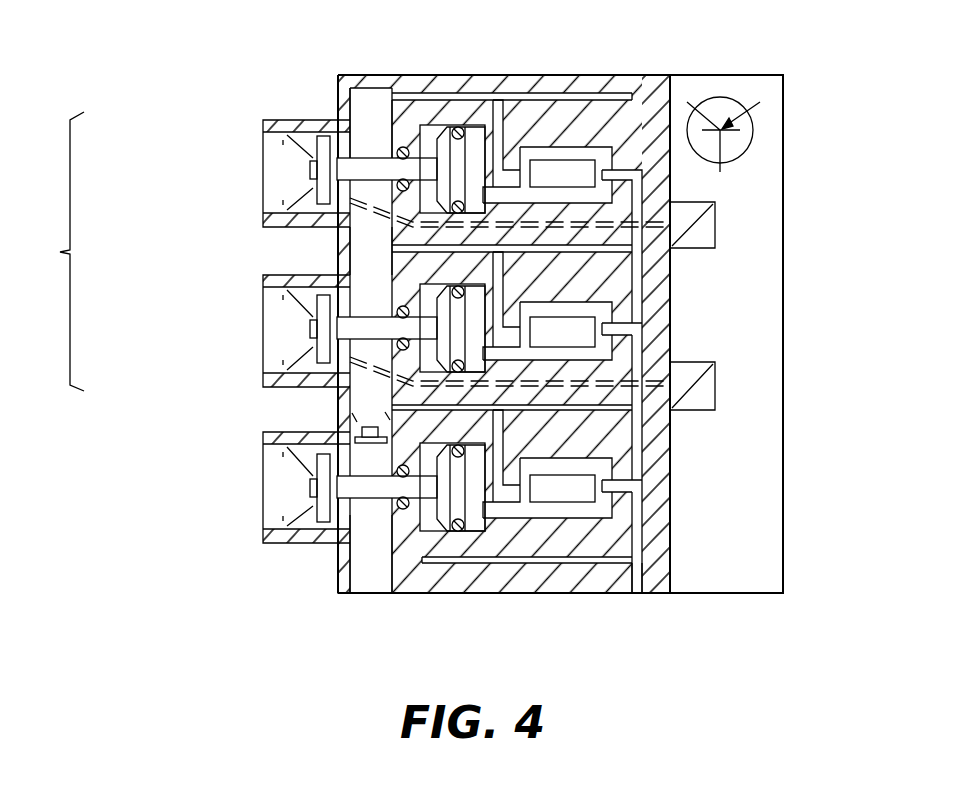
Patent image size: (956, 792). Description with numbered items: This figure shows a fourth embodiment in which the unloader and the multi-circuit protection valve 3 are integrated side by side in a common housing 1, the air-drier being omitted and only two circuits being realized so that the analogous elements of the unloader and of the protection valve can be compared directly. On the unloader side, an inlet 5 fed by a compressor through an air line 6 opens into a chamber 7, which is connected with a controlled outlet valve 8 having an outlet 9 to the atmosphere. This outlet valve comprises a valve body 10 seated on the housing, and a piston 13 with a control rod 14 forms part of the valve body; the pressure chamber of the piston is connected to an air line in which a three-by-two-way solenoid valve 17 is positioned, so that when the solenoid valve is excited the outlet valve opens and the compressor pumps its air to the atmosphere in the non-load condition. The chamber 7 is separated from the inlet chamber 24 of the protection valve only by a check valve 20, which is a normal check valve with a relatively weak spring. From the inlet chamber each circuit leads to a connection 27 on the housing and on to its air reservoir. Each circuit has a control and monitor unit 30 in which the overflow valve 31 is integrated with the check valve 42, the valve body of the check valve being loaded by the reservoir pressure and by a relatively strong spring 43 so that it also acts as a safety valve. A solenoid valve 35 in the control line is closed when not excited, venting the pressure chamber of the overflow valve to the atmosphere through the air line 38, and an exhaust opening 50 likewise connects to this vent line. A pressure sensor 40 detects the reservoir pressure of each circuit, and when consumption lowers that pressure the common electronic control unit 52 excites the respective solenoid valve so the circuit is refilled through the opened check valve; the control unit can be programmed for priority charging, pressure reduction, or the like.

The common housing 1 is at (618, 92).
The multi-circuit protection valve 3 is at (59, 251).
The inlet 5 is at (363, 596).
The air line 6 is at (373, 597).
The chamber 7 is at (372, 522).
The controlled outlet valve 8 is at (240, 521).
The outlet 9 is at (273, 470).
The valve body 10 is at (322, 513).
The piston 13 is at (425, 527).
The control rod 14 is at (356, 490).
The 3/2-way solenoid valve 17 is at (552, 528).
The check valve 20 is at (352, 428).
The inlet chamber 24 is at (367, 240).
The connection 27 is at (273, 298).
The control and monitor unit 30 is at (682, 337).
The overflow valve 31 is at (243, 328).
The check valve 42 is at (253, 327).
The solenoid valve 35 is at (590, 278).
The air line 38 is at (640, 537).
The pressure sensor 40 is at (707, 387).
The spring 43 is at (298, 353).
The exhaust opening 50 is at (637, 598).
The electronic control unit 52 is at (767, 85).